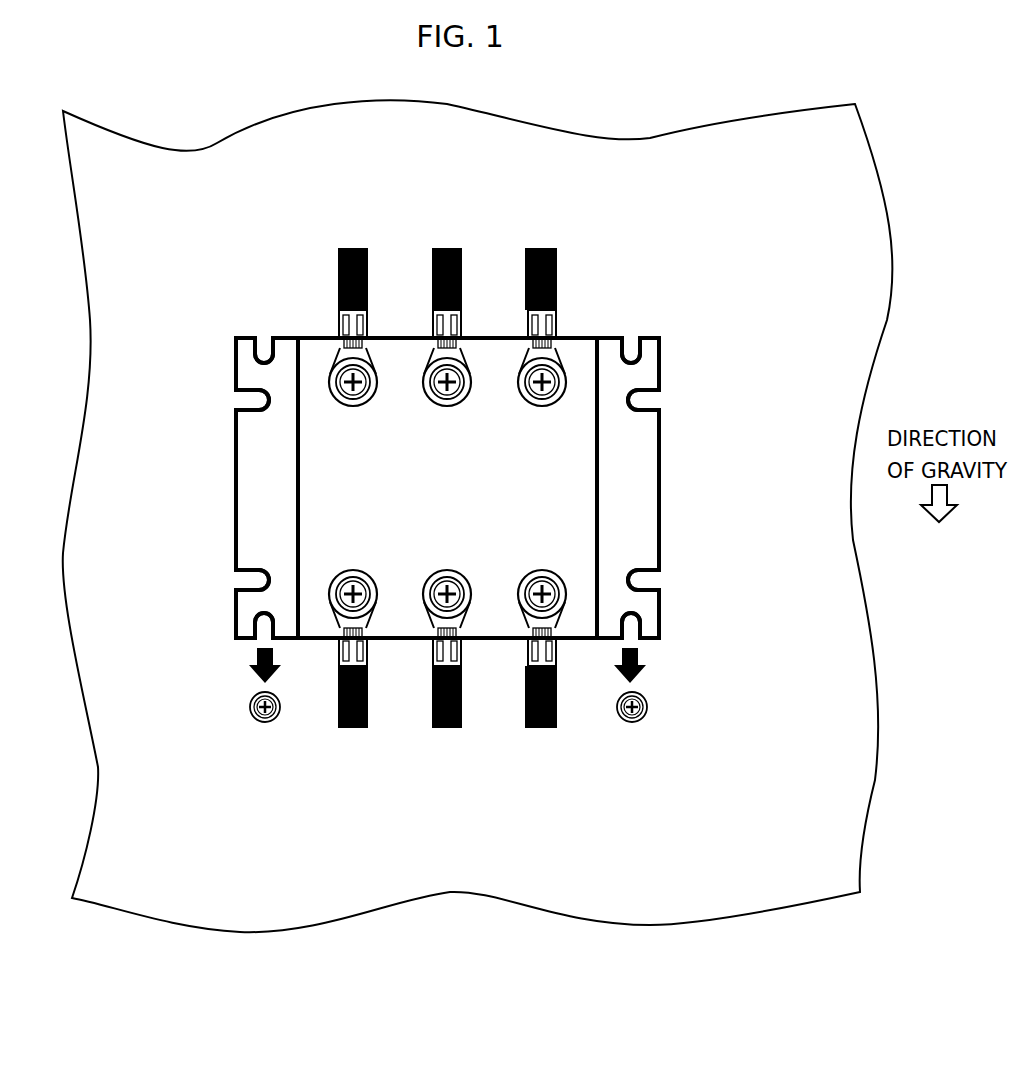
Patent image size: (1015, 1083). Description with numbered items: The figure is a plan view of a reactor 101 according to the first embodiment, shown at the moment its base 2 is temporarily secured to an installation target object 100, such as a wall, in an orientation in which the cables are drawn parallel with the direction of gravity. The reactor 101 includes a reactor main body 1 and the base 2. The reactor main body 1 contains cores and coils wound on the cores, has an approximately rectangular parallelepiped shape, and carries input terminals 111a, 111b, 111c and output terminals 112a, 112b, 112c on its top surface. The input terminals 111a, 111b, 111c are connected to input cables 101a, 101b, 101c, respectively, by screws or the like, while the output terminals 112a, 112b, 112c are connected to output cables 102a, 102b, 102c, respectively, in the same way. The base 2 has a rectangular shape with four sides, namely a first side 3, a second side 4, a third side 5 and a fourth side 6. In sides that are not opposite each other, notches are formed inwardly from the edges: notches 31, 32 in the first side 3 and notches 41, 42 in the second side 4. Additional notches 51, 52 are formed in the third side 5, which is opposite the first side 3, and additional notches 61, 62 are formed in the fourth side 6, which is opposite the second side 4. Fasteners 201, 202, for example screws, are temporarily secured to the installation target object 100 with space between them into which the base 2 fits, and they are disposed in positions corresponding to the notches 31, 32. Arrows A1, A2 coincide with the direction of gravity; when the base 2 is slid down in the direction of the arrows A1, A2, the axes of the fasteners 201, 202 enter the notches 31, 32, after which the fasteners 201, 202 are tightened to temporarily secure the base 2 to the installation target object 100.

The reactor main body 1 is at (455, 494).
The base 2 is at (274, 498).
The first side 3 is at (572, 641).
The second side 4 is at (661, 500).
The third side 5 is at (336, 335).
The fourth side 6 is at (235, 482).
The notch 31 is at (258, 646).
The notch 32 is at (640, 640).
The notch 41 is at (660, 577).
The notch 42 is at (660, 397).
The notch 51 is at (637, 338).
The notch 52 is at (262, 335).
The notch 61 is at (245, 402).
The notch 62 is at (245, 580).
The installation target object 100 is at (866, 304).
The reactor 101 is at (676, 240).
The input cable 101a is at (352, 729).
The input cable 101b is at (438, 729).
The input cable 101c is at (530, 729).
The output cable 102a is at (360, 249).
The output cable 102b is at (452, 249).
The output cable 102c is at (544, 249).
The input terminal 111a is at (334, 641).
The input terminal 111b is at (428, 641).
The input terminal 111c is at (523, 641).
The output terminal 112a is at (366, 352).
The output terminal 112b is at (460, 352).
The output terminal 112c is at (555, 352).
The fastener 201 is at (255, 714).
The fastener 202 is at (647, 712).
The arrow A1 is at (258, 674).
The arrow A2 is at (645, 674).